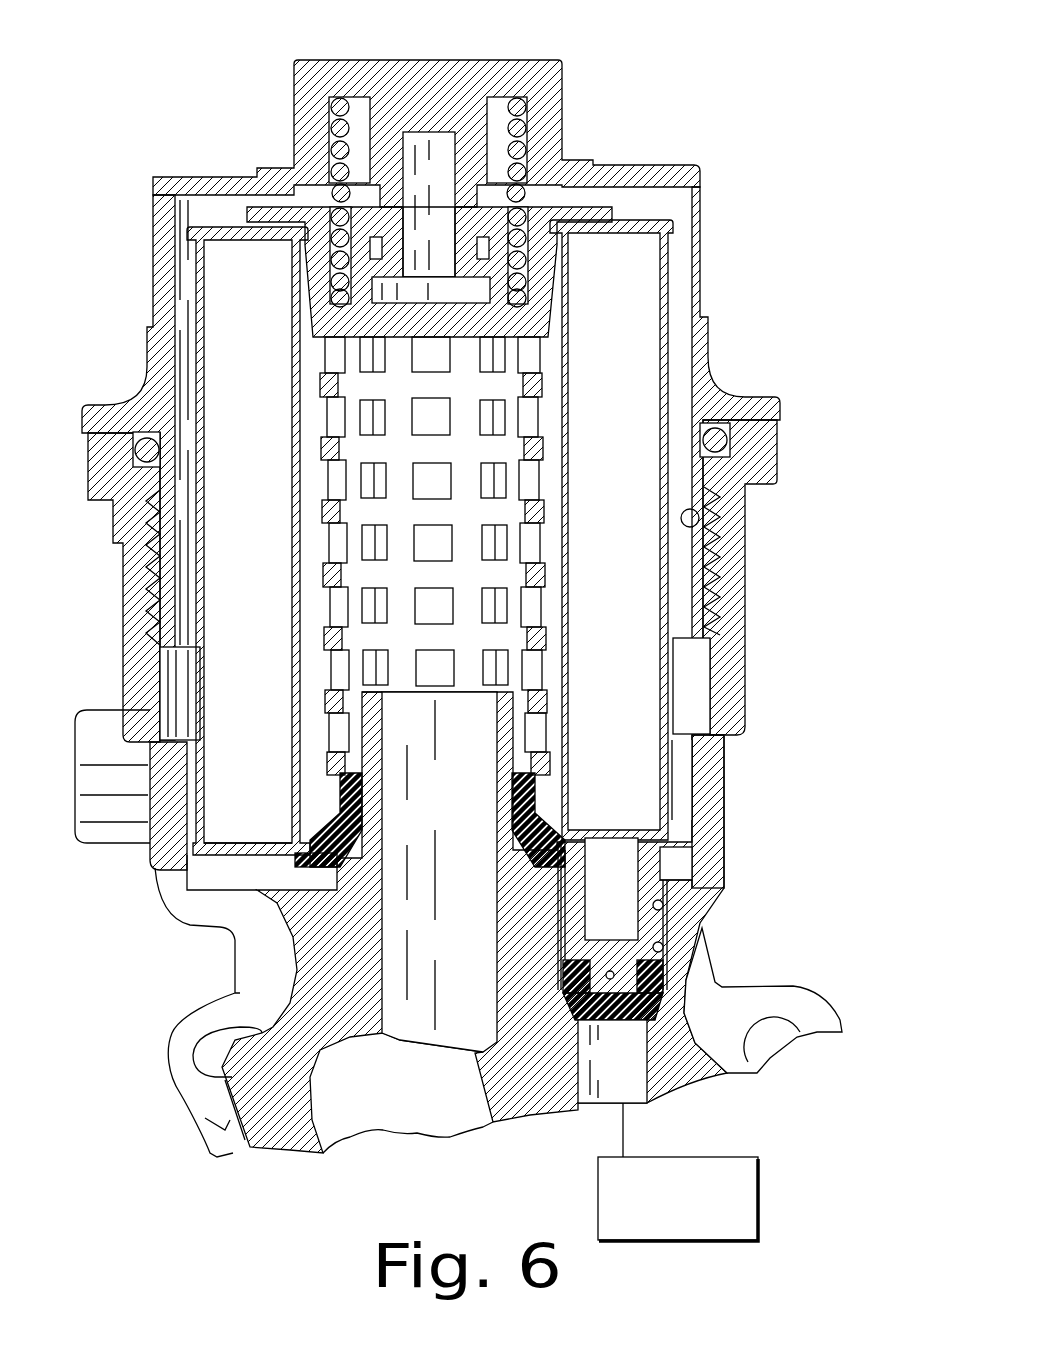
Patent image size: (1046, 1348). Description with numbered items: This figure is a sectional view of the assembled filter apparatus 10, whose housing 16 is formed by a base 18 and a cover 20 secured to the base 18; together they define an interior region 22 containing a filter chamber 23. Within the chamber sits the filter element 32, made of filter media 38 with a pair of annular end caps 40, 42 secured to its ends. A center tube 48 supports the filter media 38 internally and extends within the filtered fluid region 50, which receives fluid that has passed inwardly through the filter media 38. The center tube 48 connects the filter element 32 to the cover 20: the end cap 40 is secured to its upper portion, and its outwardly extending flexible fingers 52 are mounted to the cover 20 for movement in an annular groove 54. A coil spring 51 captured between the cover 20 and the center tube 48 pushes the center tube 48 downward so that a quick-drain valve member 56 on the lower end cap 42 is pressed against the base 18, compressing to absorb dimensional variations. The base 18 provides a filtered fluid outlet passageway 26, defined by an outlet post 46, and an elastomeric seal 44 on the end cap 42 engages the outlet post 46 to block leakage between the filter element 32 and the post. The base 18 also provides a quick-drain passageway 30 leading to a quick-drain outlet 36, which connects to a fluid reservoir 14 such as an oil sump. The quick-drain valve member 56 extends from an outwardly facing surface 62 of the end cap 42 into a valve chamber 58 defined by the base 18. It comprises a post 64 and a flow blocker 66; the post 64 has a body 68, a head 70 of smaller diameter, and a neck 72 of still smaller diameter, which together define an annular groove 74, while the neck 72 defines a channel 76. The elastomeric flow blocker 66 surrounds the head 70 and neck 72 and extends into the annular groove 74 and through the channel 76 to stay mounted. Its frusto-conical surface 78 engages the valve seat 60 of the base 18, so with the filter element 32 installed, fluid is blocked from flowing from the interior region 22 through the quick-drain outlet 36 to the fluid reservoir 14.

The filter apparatus 10 is at (116, 95).
The fluid reservoir 14 is at (728, 1157).
The housing 16 is at (712, 357).
The base 18 is at (756, 560).
The cover 20 is at (710, 231).
The interior region 22 is at (688, 766).
The filter chamber 23 is at (699, 516).
The filtered fluid outlet passageway 26 is at (497, 730).
The quick-drain passageway 30 is at (683, 1002).
The filter element 32 is at (682, 618).
The quick-drain outlet 36 is at (563, 1123).
The filter media 38 is at (658, 522).
The end cap 40 is at (234, 240).
The end cap 42 is at (239, 842).
The elastomeric seal 44 is at (358, 817).
The outlet post 46 is at (378, 719).
The center tube 48 is at (552, 378).
The filtered fluid region 50 is at (315, 482).
The spring 51 is at (528, 142).
The flexible fingers 52 is at (372, 243).
The annular groove 54 is at (382, 194).
The quick-drain valve member 56 is at (672, 921).
The valve chamber 58 is at (668, 905).
The valve seat 60 is at (612, 1061).
The outwardly facing surface 62 is at (688, 852).
The post 64 is at (556, 893).
The flow blocker 66 is at (560, 1005).
The body 68 is at (570, 921).
The head 70 is at (617, 1062).
The neck 72 is at (607, 968).
The annular groove 74 is at (563, 990).
The channel 76 is at (612, 968).
The surface 78 is at (553, 1013).